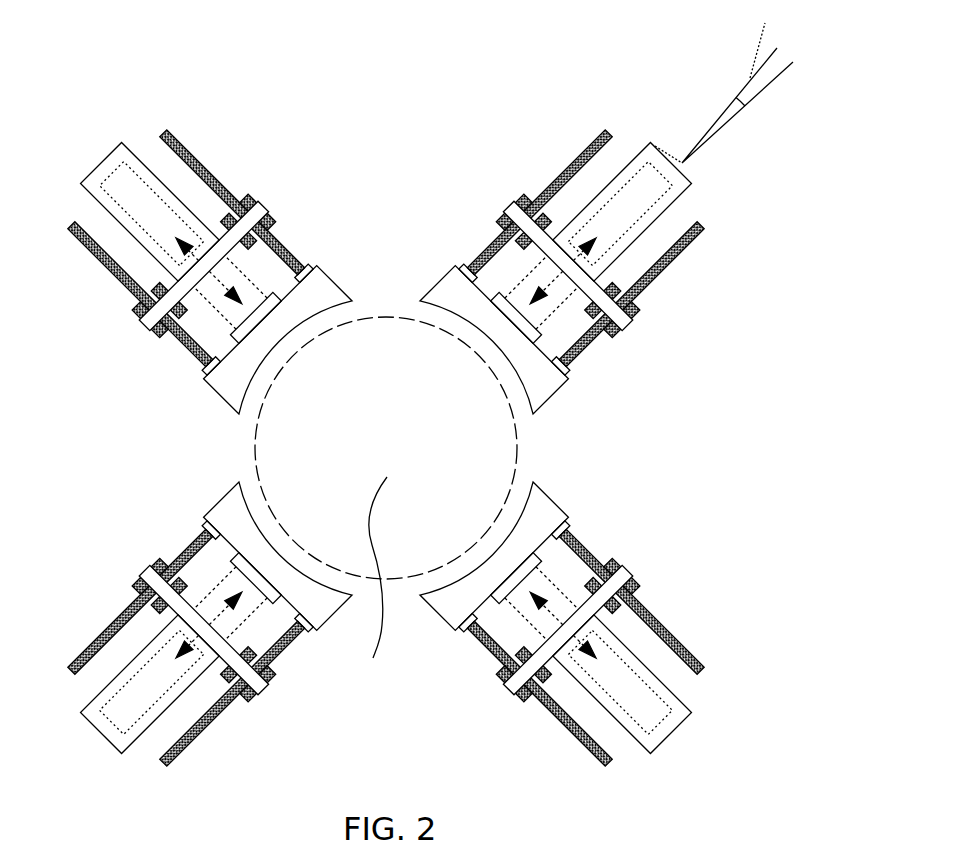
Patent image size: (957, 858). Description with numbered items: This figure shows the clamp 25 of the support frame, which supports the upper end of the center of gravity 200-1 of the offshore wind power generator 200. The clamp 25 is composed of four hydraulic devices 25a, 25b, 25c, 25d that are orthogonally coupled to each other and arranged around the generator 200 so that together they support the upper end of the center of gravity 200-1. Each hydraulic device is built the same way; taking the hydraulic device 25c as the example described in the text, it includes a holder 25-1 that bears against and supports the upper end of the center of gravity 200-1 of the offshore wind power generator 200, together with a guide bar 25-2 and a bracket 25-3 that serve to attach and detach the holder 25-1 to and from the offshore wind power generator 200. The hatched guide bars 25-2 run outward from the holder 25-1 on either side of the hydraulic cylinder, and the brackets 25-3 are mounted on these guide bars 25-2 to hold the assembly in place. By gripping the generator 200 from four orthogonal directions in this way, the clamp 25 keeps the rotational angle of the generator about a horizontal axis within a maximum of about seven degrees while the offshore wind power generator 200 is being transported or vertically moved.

The clamp 25 is at (720, 50).
The hydraulic device 25a is at (593, 257).
The hydraulic device 25b is at (654, 600).
The hydraulic device 25c is at (128, 579).
The hydraulic device 25d is at (236, 182).
The holder 25-1 is at (557, 385).
The guide bar 25-2 is at (662, 273).
The bracket 25-3 is at (635, 320).
The offshore wind power generator 200 is at (263, 442).
The center of gravity 200-1 is at (376, 583).